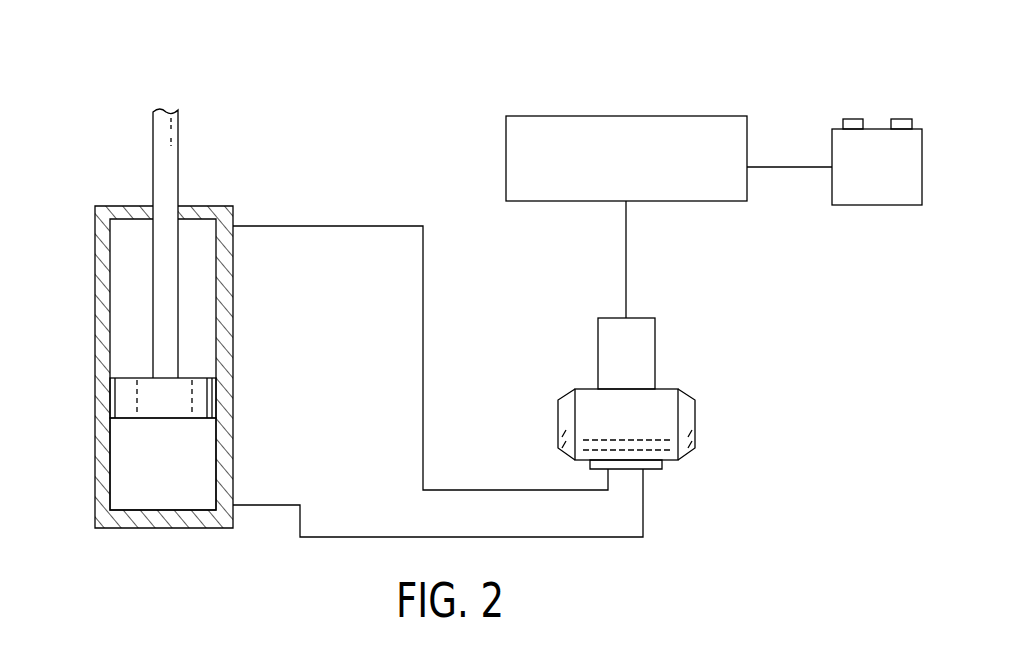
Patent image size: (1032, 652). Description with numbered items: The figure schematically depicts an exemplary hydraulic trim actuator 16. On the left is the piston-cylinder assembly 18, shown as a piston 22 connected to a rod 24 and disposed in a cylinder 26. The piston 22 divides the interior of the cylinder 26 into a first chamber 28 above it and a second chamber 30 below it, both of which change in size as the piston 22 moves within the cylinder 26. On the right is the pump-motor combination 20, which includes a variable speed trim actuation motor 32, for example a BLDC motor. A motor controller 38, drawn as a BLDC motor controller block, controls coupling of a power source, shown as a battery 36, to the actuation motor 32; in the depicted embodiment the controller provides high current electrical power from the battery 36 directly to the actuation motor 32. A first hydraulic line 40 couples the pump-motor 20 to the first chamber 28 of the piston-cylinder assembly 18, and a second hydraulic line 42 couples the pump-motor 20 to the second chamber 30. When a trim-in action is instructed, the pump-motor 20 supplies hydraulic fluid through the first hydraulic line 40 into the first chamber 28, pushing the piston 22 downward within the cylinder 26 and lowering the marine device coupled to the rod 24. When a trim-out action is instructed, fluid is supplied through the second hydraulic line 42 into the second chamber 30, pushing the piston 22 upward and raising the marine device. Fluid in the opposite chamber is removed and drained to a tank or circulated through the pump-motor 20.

The hydraulic trim actuator 16 is at (396, 138).
The piston-cylinder assembly 18 is at (81, 380).
The pump-motor combination 20 is at (773, 491).
The piston 22 is at (200, 400).
The rod 24 is at (153, 154).
The cylinder 26 is at (233, 310).
The first chamber 28 is at (205, 263).
The second chamber 30 is at (207, 465).
The variable speed trim actuation motor 32 is at (668, 453).
The battery 36 is at (872, 129).
The motor controller 38 is at (748, 137).
The first hydraulic line 40 is at (325, 226).
The second hydraulic line 42 is at (301, 522).